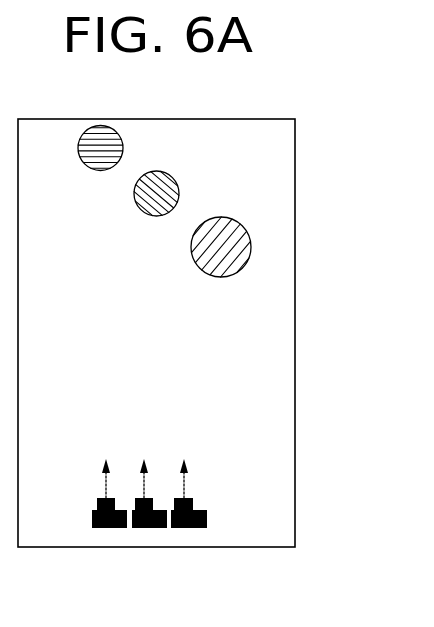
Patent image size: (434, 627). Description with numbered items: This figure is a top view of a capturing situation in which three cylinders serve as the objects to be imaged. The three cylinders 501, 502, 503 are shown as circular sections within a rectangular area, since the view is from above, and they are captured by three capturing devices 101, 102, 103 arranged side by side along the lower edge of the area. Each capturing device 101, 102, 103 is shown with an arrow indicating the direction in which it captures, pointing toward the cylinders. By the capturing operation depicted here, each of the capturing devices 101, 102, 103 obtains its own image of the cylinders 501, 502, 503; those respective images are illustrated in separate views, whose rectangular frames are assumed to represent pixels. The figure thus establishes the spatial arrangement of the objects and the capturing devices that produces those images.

The cylinder 501 is at (100, 126).
The cylinder 502 is at (179, 192).
The cylinder 503 is at (251, 246).
The capturing device 101 is at (103, 529).
The capturing device 102 is at (153, 529).
The capturing device 103 is at (200, 529).